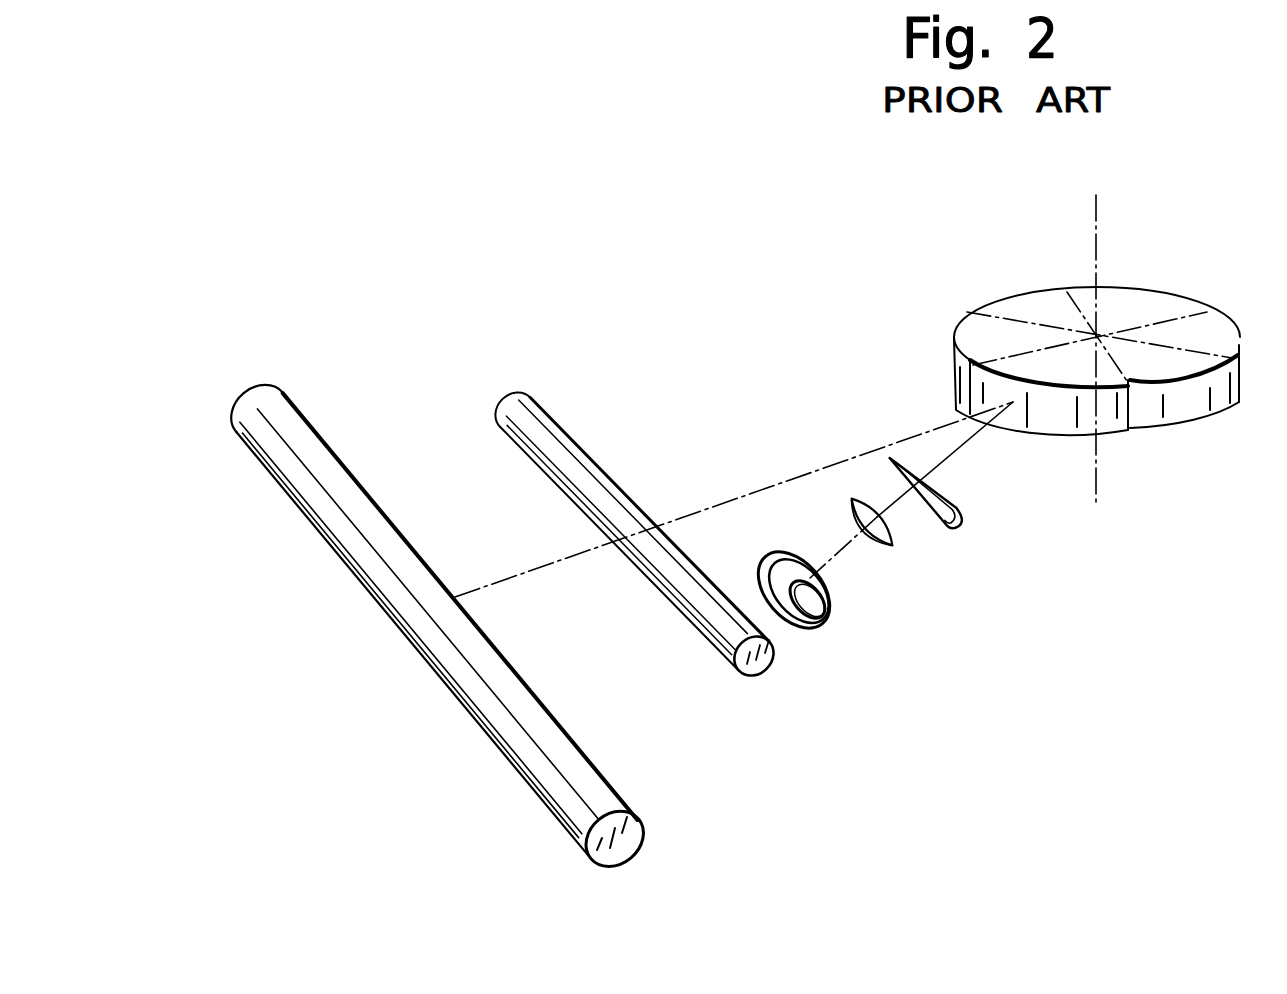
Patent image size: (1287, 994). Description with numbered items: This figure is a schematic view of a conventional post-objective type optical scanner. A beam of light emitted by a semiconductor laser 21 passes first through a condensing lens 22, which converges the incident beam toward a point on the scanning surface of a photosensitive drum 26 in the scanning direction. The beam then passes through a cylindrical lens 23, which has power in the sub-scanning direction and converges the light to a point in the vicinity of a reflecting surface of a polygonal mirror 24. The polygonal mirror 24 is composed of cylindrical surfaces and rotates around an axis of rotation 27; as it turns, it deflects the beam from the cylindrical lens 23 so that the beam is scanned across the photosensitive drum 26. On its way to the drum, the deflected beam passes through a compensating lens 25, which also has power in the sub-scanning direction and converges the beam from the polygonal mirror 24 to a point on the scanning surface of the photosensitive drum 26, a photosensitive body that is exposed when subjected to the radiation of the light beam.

The semiconductor laser 21 is at (823, 600).
The condensing lens 22 is at (888, 547).
The cylindrical lens 23 is at (955, 525).
The polygonal mirror 24 is at (1003, 301).
The compensating lens 25 is at (523, 403).
The photosensitive drum 26 is at (270, 389).
The axis of rotation 27 is at (1099, 230).